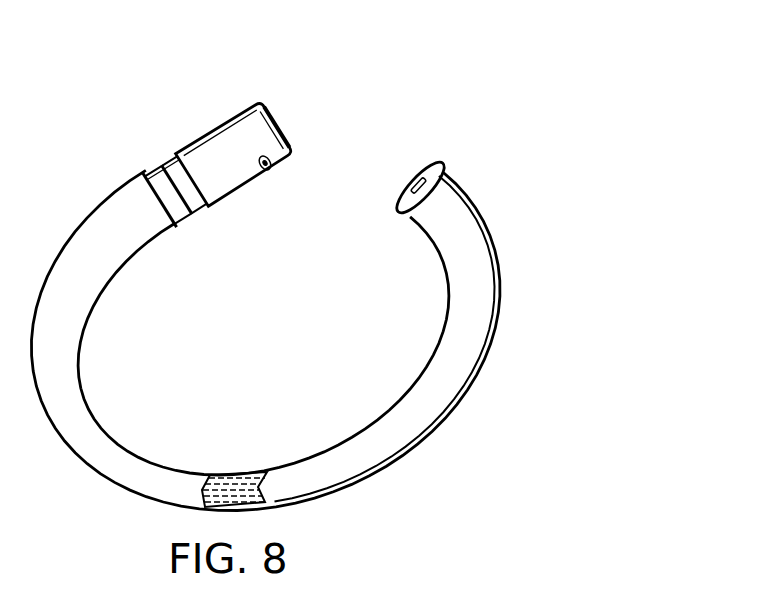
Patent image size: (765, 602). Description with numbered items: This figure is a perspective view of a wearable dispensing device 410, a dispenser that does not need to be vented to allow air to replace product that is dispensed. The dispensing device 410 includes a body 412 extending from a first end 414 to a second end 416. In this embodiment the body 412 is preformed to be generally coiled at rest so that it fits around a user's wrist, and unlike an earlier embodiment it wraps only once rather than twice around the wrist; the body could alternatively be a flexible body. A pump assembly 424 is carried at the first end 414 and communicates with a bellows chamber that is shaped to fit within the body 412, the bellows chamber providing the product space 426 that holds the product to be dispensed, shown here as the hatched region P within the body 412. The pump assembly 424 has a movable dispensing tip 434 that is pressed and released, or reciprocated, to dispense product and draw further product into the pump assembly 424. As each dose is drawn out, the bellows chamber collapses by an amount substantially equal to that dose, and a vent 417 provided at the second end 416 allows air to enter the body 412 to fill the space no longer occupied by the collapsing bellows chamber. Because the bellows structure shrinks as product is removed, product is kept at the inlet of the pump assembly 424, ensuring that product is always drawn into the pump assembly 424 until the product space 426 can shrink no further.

The dispensing device 410 is at (360, 115).
The body 412 is at (315, 442).
The first end 414 is at (174, 226).
The second end 416 is at (409, 214).
The vent 417 is at (412, 188).
The pump assembly 424 is at (205, 113).
The product space 426 is at (240, 490).
The movable dispensing tip 434 is at (262, 128).
The patch region P is at (250, 483).